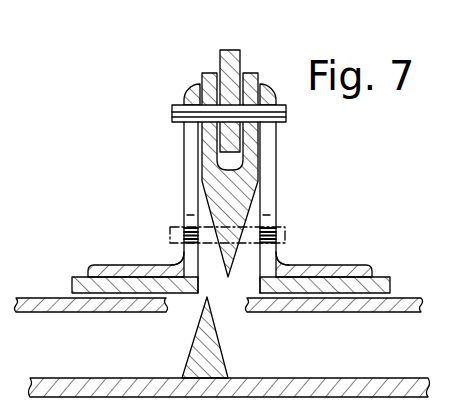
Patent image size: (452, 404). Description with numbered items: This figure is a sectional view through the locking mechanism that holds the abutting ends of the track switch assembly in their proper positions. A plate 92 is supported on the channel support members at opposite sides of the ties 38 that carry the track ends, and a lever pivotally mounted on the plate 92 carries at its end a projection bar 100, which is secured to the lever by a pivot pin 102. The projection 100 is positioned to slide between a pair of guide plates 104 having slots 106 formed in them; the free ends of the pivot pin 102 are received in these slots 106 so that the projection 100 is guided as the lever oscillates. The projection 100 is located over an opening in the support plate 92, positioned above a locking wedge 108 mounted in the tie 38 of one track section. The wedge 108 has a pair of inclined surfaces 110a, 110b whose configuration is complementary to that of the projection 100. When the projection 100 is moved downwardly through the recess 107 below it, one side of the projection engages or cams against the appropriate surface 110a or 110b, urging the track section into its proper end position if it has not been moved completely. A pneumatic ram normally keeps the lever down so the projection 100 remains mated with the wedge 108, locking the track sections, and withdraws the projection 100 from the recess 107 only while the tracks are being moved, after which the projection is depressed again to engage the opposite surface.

The tie 38 is at (78, 366).
The plate 92 is at (374, 286).
The projection bar 100 is at (243, 176).
The pivot pin 102 is at (288, 118).
The guide plates 104 is at (181, 152).
The slots 106 is at (269, 205).
The recess 107 is at (275, 262).
The locking wedge 108 is at (223, 360).
The inclined surface 110a is at (247, 304).
The inclined surface 110b is at (167, 304).